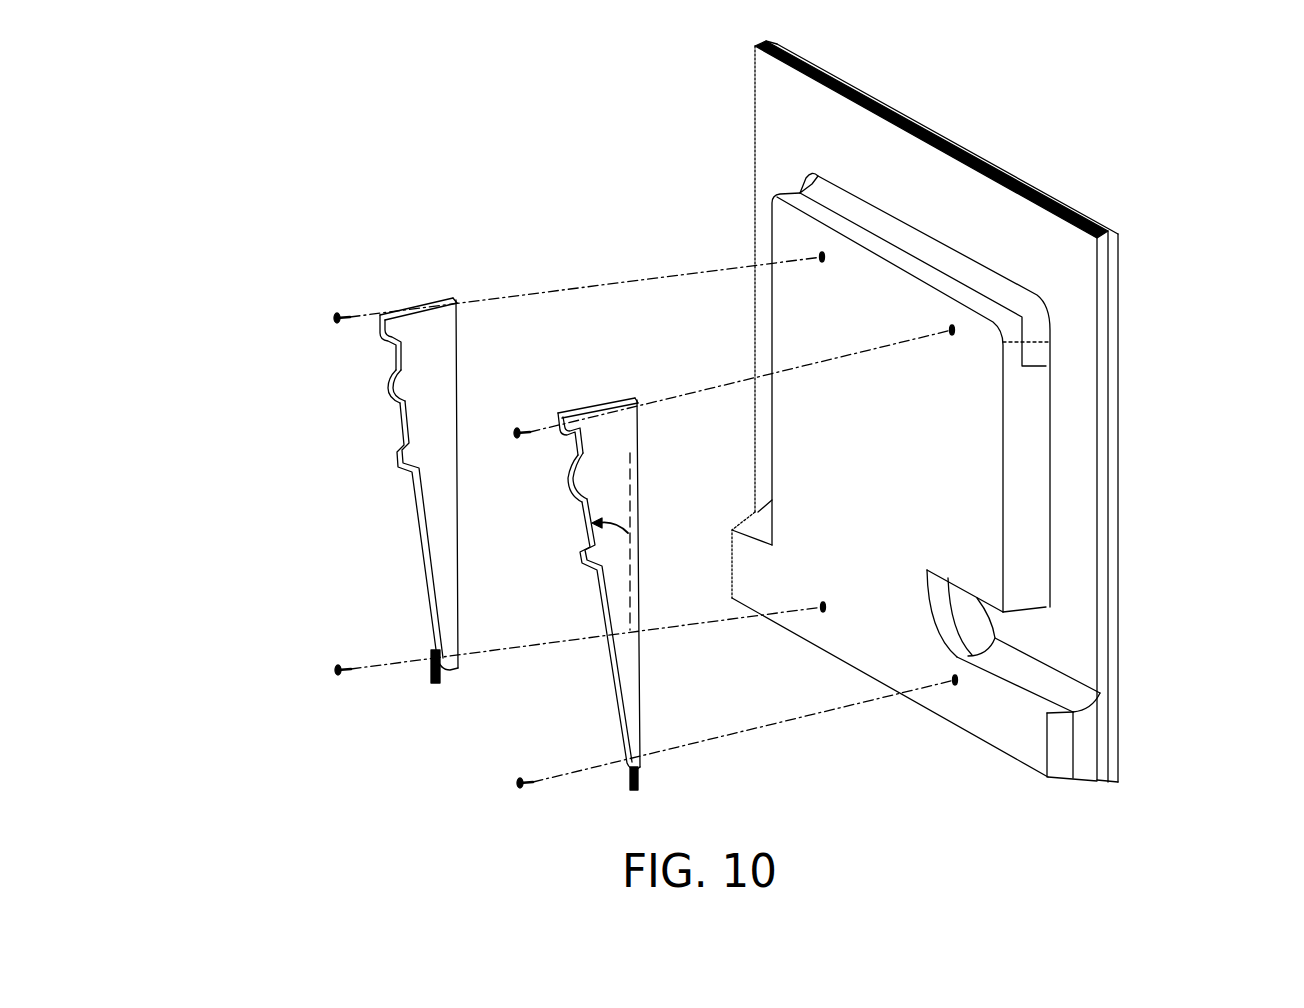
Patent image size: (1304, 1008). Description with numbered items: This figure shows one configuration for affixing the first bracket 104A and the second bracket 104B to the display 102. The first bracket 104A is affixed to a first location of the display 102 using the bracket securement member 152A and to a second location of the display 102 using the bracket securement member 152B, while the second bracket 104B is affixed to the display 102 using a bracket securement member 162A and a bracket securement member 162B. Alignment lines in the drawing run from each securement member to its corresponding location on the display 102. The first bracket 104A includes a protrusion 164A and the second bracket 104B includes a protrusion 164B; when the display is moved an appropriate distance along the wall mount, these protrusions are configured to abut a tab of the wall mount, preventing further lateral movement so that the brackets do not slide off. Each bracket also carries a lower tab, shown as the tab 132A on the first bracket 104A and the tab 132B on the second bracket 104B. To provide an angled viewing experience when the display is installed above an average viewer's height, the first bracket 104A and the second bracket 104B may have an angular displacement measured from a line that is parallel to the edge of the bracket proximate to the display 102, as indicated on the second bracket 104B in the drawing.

The display 102 is at (1113, 458).
The first bracket 104A is at (357, 525).
The second bracket 104B is at (558, 623).
The tab of first bracket 132A is at (436, 671).
The tab of second bracket 132B is at (633, 778).
The bracket securement member 152A is at (333, 318).
The bracket securement member 152B is at (336, 671).
The bracket securement member 162A is at (516, 436).
The bracket securement member 162B is at (518, 784).
The protrusion 164A is at (387, 390).
The protrusion 164B is at (575, 488).